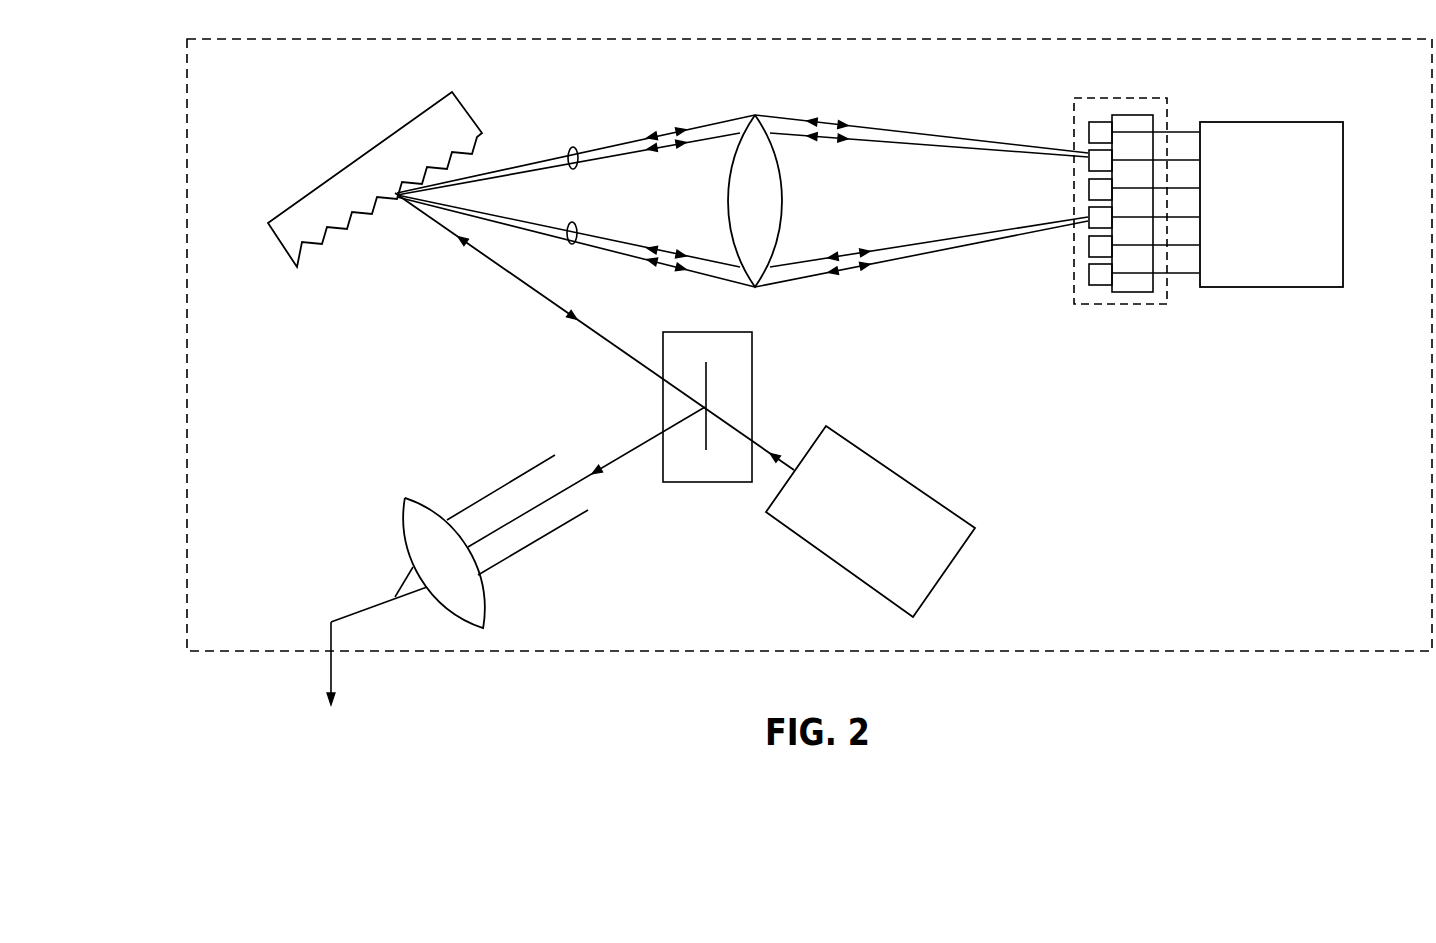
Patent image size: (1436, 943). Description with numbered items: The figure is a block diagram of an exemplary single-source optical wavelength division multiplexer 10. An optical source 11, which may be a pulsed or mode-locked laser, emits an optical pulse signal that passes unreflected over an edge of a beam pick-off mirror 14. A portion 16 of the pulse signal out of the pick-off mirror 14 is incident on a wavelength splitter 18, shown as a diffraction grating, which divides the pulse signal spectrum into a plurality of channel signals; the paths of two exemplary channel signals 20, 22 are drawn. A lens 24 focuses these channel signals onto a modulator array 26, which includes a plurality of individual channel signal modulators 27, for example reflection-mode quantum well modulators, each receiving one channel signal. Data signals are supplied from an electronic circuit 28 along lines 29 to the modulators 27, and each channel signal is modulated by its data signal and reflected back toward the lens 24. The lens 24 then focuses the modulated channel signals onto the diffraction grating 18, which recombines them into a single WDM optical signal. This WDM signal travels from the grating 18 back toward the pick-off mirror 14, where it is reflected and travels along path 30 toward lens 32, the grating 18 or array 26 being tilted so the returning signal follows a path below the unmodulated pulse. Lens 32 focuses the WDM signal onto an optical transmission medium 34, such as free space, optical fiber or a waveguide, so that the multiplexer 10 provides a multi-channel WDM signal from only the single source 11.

The single-source optical wavelength division multiplexer 10 is at (185, 97).
The optical source 11 is at (913, 485).
The beam pick-off mirror 14 is at (752, 352).
The portion of the pulse signal 16 is at (510, 277).
The wavelength splitter 18 is at (360, 153).
The channel signal 20 is at (574, 147).
The channel signal 22 is at (578, 223).
The lens 24 is at (782, 193).
The modulator array 26 is at (1148, 181).
The channel signal modulators 27 is at (1089, 125).
The electronic circuit 28 is at (1345, 193).
The lines 29 is at (1183, 130).
The path 30 is at (618, 455).
The lens 32 is at (405, 518).
The optical transmission medium 34 is at (331, 680).